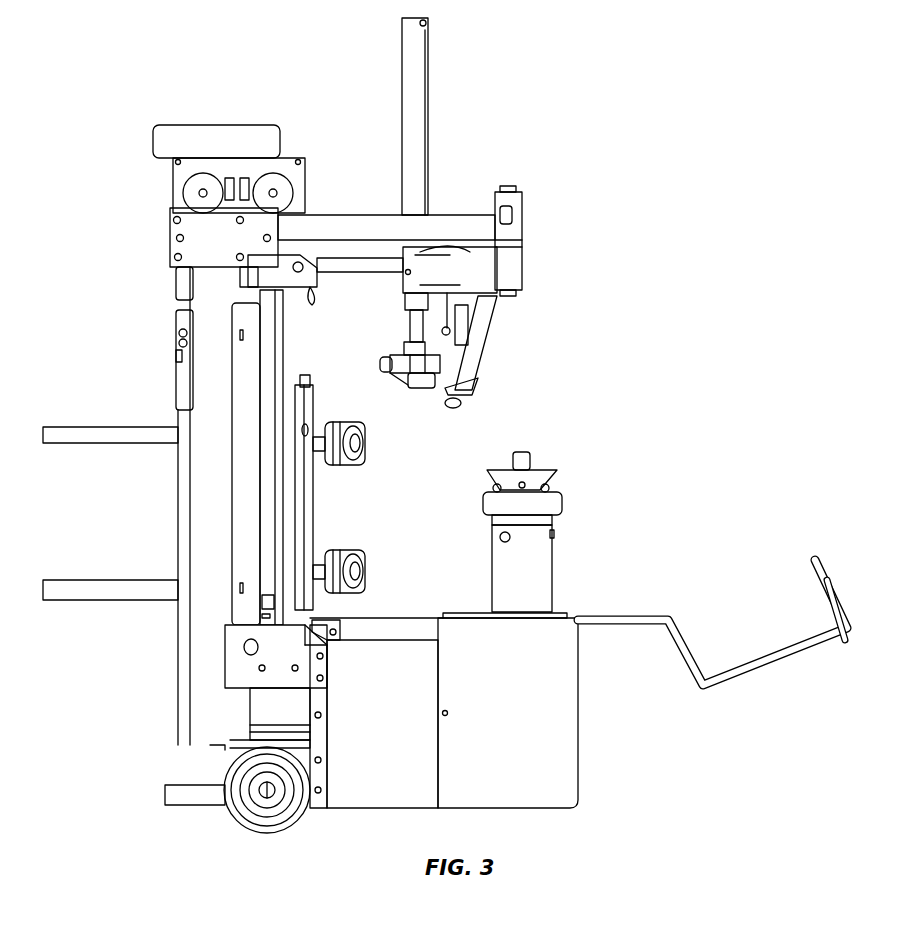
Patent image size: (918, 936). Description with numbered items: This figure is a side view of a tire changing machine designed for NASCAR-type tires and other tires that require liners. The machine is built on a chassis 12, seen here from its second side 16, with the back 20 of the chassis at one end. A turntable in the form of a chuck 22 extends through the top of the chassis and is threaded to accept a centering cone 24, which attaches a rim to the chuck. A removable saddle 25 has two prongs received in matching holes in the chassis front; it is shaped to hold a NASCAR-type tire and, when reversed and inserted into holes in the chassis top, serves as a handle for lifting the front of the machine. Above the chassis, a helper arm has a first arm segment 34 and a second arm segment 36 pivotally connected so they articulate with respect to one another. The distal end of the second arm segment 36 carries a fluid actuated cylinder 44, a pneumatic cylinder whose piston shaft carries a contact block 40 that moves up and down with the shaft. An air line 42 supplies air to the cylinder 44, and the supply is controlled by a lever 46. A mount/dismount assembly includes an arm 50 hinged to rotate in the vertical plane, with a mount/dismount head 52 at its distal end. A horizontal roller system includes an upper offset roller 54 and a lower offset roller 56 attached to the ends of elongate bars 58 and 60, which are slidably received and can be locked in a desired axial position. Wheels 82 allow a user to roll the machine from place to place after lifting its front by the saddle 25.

The chassis 12 is at (580, 778).
The second side 16 is at (500, 706).
The back 20 is at (116, 491).
The chuck 22 is at (562, 503).
The centering cone 24 is at (548, 470).
The removable saddle 25 is at (712, 690).
The first arm segment 34 is at (350, 215).
The second arm segment 36 is at (460, 278).
The contact block 40 is at (425, 388).
The air line 42 is at (428, 172).
The fluid actuated cylinder 44 is at (402, 70).
The lever 46 is at (448, 322).
The arm 50 is at (488, 336).
The mount/dismount head 52 is at (452, 410).
The upper offset roller 54 is at (365, 452).
The lower offset roller 56 is at (366, 565).
The elongate bar 58 is at (92, 427).
The elongate bar 60 is at (90, 580).
The wheels 82 is at (277, 833).